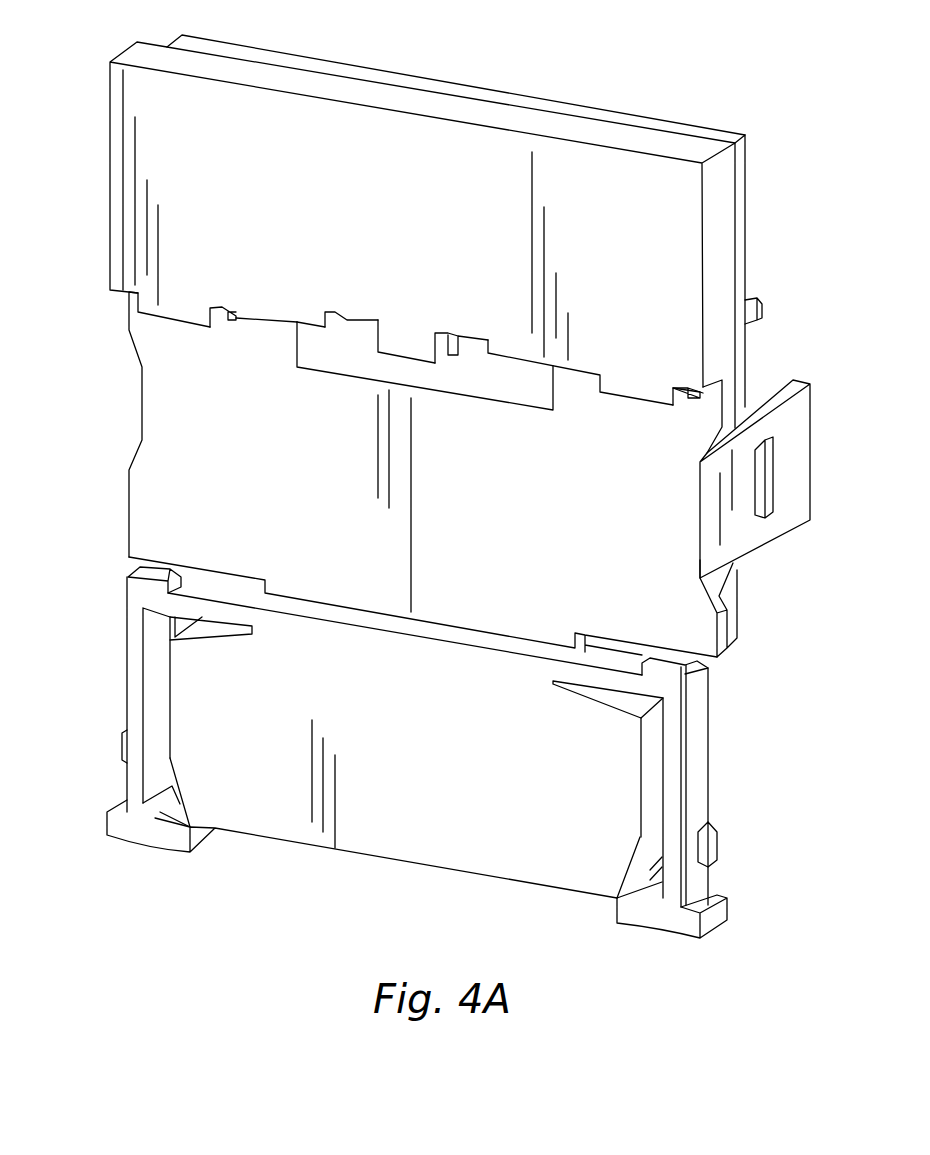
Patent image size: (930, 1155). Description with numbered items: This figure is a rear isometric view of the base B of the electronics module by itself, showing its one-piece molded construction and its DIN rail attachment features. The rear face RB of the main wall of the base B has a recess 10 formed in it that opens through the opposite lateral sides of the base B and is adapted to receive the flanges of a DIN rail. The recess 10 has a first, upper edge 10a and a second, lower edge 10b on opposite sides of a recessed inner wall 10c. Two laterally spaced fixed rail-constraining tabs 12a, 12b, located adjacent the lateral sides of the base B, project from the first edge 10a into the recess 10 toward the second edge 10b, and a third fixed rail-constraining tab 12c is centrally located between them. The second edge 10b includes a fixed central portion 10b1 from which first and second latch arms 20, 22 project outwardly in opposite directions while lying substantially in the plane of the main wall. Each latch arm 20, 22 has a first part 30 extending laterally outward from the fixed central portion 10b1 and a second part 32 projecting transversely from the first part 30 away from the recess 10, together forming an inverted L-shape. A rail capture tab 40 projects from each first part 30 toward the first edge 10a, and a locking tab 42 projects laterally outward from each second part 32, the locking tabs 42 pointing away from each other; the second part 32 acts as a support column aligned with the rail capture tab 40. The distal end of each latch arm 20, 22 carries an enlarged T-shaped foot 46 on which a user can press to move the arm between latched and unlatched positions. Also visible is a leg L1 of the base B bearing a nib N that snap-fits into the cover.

The base B is at (550, 123).
The rear face of the base RB is at (394, 181).
The recess 10 is at (230, 458).
The first (upper) edge of the recess 10a is at (267, 318).
The second (lower) edge of the recess 10b is at (383, 624).
The fixed central portion of the second edge 10b1 is at (432, 632).
The inner wall of the recess 10c is at (290, 503).
The first fixed rail-constraining tab 12a is at (172, 313).
The second fixed rail-constraining tab 12b is at (636, 394).
The third fixed rail-constraining tab 12c is at (405, 352).
The first leg L1 is at (786, 420).
The nib N is at (773, 482).
The first latch arm 20 is at (123, 714).
The second latch arm 22 is at (706, 732).
The first part of the latch arm 30 is at (188, 612).
The second part of the latch arm 32 is at (158, 732).
The rail capture tab 40 is at (147, 583).
The locking tab 42 is at (122, 747).
The foot 46 is at (162, 843).